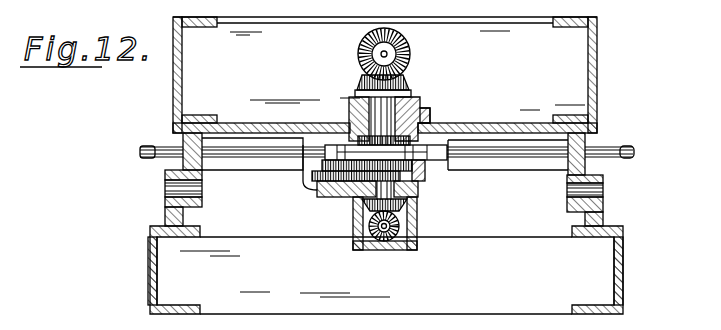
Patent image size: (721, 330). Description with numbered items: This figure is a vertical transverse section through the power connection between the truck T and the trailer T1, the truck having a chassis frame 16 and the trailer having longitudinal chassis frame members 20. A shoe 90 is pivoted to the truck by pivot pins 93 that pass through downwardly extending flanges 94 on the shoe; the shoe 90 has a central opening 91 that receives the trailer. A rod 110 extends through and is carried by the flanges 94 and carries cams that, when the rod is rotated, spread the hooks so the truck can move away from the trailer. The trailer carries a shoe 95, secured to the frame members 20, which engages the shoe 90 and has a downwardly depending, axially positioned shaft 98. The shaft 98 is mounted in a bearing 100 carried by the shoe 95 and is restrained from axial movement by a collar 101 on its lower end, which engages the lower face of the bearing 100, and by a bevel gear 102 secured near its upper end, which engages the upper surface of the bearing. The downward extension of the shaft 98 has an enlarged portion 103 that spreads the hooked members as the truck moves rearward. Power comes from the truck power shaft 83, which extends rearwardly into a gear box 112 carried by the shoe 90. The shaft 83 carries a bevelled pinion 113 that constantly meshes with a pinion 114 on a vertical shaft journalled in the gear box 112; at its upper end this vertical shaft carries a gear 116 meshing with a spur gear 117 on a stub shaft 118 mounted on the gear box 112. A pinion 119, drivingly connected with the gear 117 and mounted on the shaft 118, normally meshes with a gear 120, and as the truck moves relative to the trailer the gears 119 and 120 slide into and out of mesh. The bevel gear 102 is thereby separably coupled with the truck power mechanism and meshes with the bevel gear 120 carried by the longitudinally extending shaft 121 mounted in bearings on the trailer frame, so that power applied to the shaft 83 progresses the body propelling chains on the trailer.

The trailer T1 is at (598, 43).
The truck T is at (623, 272).
The longitudinal chassis frame members 20 is at (590, 75).
The chassis frame 16 is at (158, 293).
The shoe 95 is at (532, 125).
The shoe 90 is at (580, 147).
The pivot pins 93 is at (602, 190).
The flanges 94 is at (620, 160).
The rod 110 is at (630, 150).
The gear 120 is at (358, 50).
The shaft 121 is at (384, 52).
The bevel gear 102 is at (406, 77).
The shaft 98 is at (390, 112).
The bearing 100 is at (413, 106).
The collar 101 is at (355, 120).
The central opening 91 is at (422, 108).
The enlarged portion 103 is at (363, 148).
The pinion 119 is at (313, 172).
The gear 116 is at (413, 196).
The spur gear 117 is at (315, 186).
The stub shaft 118 is at (337, 183).
The gear box 112 is at (415, 243).
The pinion 114 is at (367, 208).
The bevelled pinion 113 is at (381, 229).
The power shaft 83 is at (388, 229).